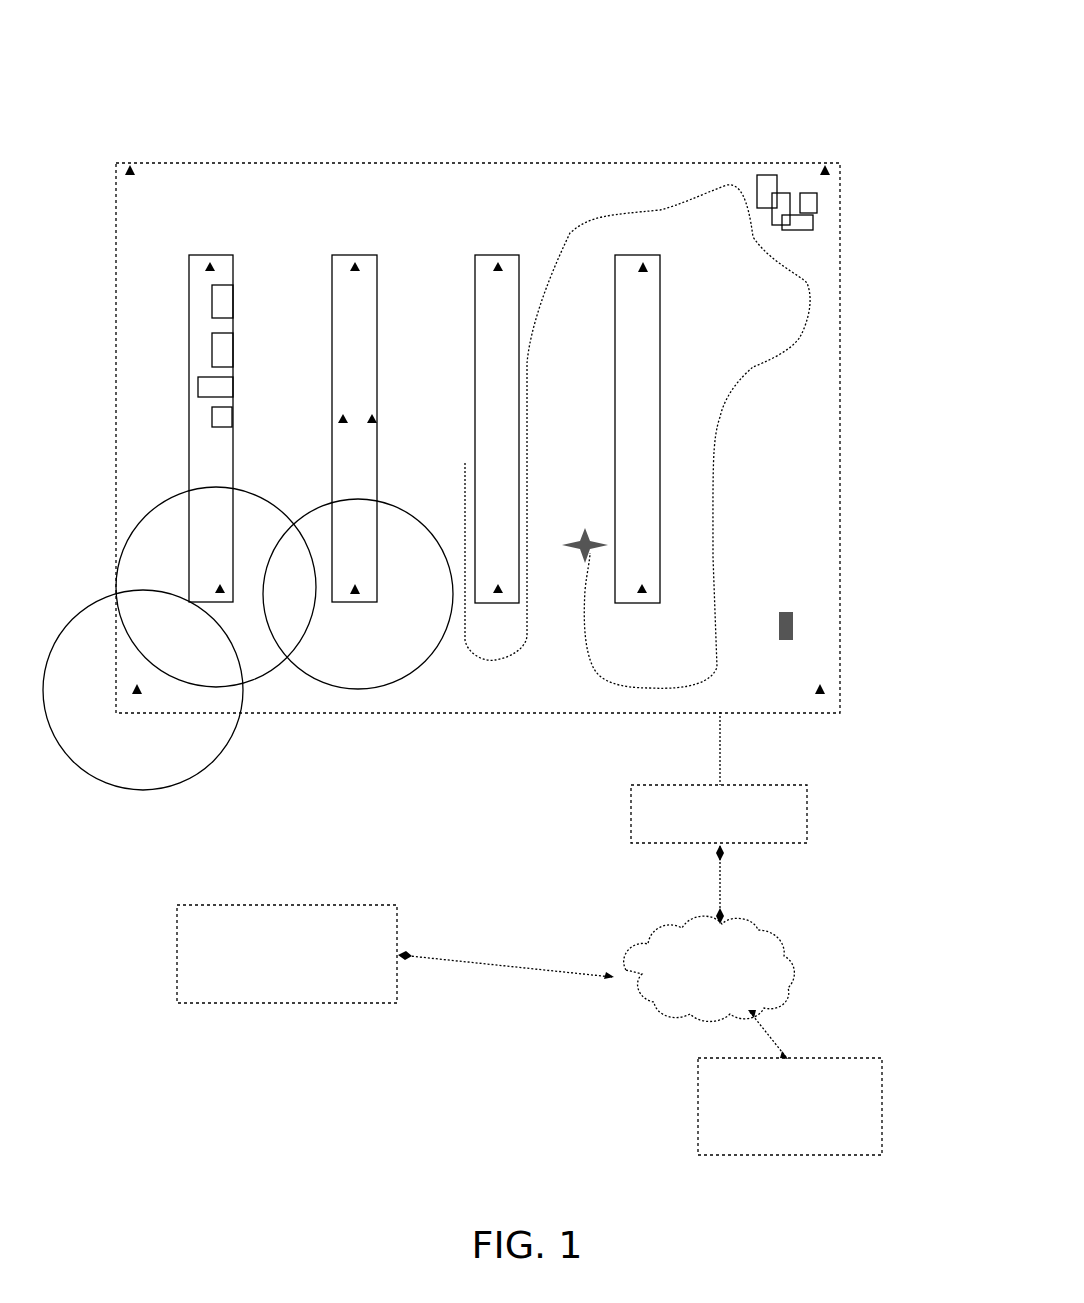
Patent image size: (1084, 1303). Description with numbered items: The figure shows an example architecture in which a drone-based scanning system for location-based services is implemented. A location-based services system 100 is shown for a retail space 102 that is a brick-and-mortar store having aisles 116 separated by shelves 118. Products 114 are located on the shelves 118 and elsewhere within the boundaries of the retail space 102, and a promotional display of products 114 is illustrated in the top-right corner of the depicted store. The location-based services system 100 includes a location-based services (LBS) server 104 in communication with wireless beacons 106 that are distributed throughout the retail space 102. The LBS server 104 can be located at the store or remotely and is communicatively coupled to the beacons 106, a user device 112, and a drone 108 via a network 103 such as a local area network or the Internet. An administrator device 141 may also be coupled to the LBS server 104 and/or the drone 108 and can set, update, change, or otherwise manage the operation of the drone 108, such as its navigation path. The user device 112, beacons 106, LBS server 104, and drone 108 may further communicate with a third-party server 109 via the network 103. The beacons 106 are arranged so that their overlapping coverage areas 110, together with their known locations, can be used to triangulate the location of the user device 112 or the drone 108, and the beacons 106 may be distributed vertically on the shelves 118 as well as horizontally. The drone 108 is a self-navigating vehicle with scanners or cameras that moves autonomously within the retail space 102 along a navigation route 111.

The location-based services system 100 is at (723, 72).
The retail space 102 is at (640, 160).
The network 103 is at (752, 965).
The location-based services (LBS) server 104 is at (808, 820).
The wireless beacons 106 is at (130, 175).
The drone 108 is at (588, 528).
The third-party server 109 is at (850, 1105).
The overlapping coverage areas 110 is at (175, 775).
The navigation route 111 is at (642, 436).
The user device 112 is at (790, 614).
The products 114 is at (801, 228).
The aisles 116 is at (424, 429).
The shelves 118 is at (425, 388).
The administrator device 141 is at (370, 995).